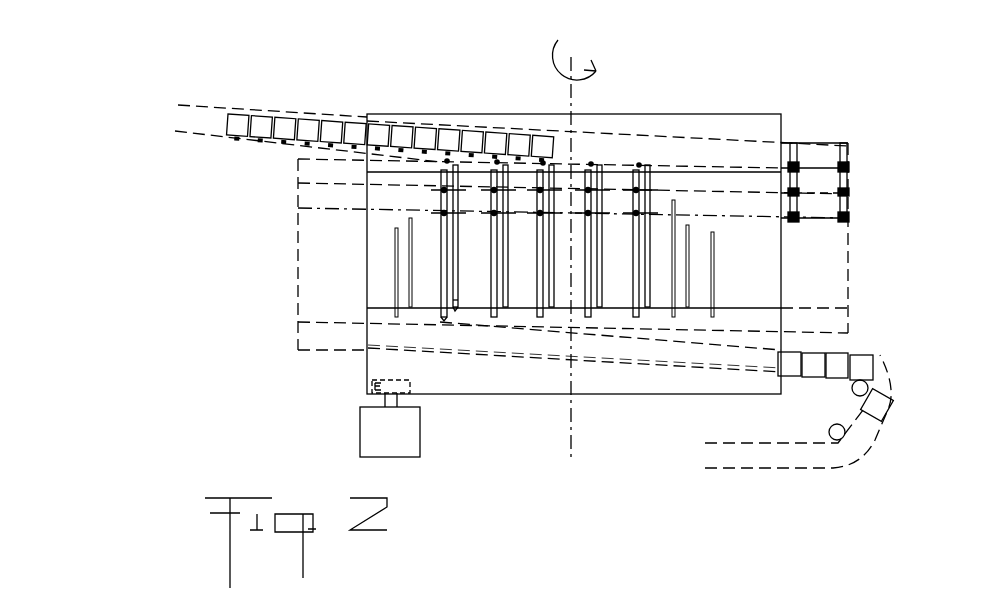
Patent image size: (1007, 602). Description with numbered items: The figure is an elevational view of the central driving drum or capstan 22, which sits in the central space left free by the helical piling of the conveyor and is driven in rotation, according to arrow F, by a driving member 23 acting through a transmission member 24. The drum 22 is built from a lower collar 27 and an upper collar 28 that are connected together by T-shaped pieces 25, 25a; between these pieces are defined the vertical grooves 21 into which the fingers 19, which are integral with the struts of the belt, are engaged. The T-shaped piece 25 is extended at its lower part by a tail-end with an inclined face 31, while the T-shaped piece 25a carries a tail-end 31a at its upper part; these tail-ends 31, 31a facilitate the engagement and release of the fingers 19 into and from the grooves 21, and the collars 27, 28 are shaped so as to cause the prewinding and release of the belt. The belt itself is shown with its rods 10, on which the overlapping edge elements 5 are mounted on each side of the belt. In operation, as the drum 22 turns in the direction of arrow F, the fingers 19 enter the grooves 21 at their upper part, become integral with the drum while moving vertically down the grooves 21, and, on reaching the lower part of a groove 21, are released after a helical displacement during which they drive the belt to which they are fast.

The edge elements 5 is at (337, 117).
The rods 10 is at (826, 193).
The fingers 19 is at (447, 192).
The vertical grooves 21 is at (450, 230).
The central drum 22 is at (684, 108).
The driving member 23 is at (368, 430).
The transmission member 24 is at (370, 383).
The T-shaped piece 25 is at (440, 270).
The T-shaped piece 25a is at (453, 263).
The lower collar 27 is at (663, 377).
The upper collar 28 is at (760, 130).
The tail-end with inclined face 31 is at (447, 158).
The tail-end 31a is at (453, 310).
The arrow F is at (574, 237).